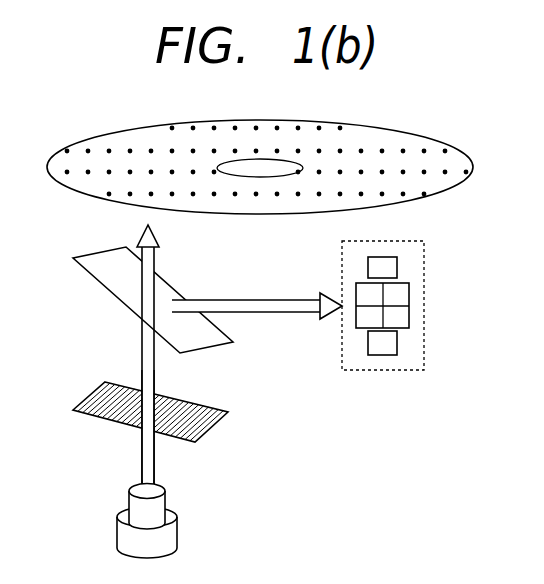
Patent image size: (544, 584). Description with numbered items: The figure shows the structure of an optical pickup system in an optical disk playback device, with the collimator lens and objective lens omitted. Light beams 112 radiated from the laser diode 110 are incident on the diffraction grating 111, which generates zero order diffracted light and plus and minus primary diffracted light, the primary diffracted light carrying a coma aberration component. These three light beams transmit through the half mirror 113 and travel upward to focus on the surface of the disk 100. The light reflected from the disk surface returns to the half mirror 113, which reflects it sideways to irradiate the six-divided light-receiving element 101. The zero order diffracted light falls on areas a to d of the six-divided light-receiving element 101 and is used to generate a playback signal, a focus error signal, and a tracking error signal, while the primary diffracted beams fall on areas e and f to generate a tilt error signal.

The disk 100 is at (396, 132).
The six-divided light-receiving element 101 is at (411, 241).
The laser diode 110 is at (175, 511).
The diffraction grating 111 is at (205, 408).
The light beams 112 is at (141, 444).
The half mirror 113 is at (103, 284).